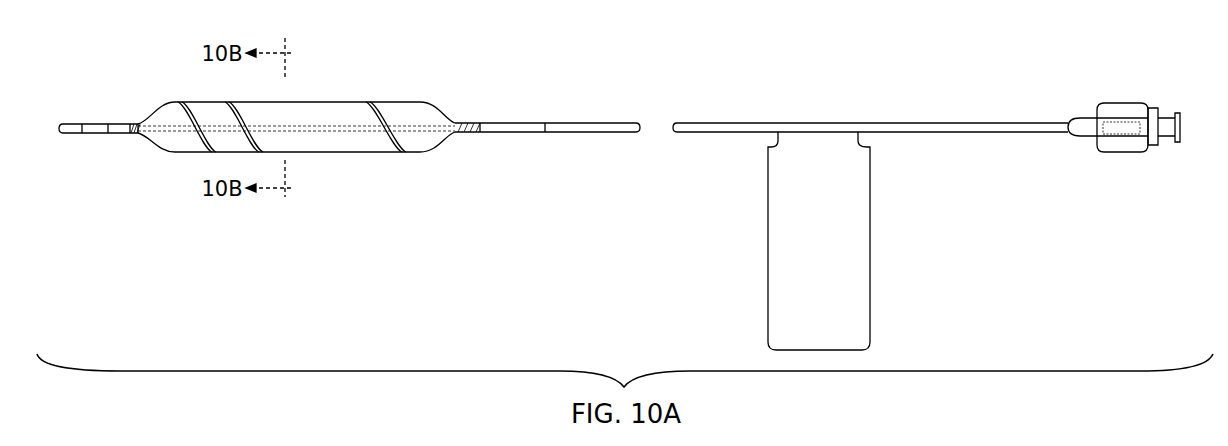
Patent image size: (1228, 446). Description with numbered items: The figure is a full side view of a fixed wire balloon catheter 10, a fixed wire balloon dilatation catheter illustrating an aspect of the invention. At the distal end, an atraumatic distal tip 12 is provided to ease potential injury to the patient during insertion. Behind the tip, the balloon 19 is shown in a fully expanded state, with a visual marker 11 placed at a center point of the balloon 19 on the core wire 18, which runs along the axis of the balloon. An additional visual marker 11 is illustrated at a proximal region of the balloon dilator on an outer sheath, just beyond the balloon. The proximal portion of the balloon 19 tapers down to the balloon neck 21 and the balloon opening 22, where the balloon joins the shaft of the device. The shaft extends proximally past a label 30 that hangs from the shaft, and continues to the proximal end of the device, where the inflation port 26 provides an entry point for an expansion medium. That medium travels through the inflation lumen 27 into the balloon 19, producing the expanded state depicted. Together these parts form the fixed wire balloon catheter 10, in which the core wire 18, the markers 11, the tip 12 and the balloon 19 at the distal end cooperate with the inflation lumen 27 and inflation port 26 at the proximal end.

The fixed wire balloon catheter 10 is at (155, 63).
The visual marker 11 is at (275, 128).
The atraumatic distal tip 12 is at (58, 126).
The core wire 18 is at (228, 130).
The balloon 19 is at (368, 102).
The balloon neck 21 is at (445, 113).
The balloon opening 22 is at (453, 134).
The inflation port 26 is at (1170, 118).
The inflation lumen 27 is at (1015, 122).
The label 30 is at (788, 222).